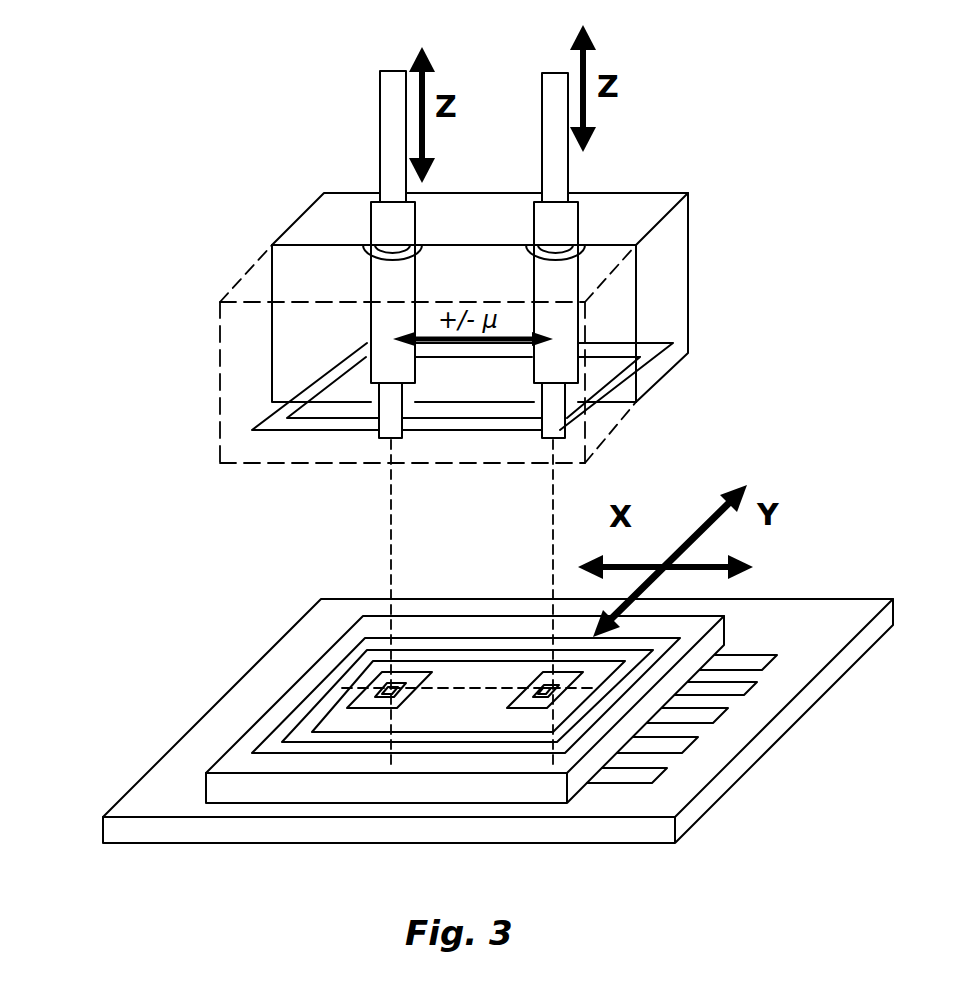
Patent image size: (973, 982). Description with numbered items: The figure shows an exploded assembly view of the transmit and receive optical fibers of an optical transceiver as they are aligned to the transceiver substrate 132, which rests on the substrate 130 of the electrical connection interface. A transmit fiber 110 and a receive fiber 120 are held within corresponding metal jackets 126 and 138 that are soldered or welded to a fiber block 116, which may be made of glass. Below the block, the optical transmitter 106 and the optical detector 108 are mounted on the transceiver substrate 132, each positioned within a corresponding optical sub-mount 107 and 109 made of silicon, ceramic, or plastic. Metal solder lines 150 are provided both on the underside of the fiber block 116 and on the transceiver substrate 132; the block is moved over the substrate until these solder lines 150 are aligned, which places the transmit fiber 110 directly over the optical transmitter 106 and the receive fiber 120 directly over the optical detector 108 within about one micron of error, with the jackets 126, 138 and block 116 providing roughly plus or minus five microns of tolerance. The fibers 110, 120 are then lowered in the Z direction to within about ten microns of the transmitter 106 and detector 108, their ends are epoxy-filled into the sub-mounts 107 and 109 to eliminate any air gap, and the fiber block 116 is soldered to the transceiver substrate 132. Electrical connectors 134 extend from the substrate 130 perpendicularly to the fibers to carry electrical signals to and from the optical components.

The optical transmitter 106 is at (540, 687).
The optical sub-mount 107 is at (522, 702).
The optical detector 108 is at (387, 685).
The optical sub-mount 109 is at (348, 707).
The transmit fiber 110 is at (565, 175).
The fiber block 116 is at (690, 292).
The receive fiber 120 is at (381, 120).
The metal jacket 126 is at (560, 222).
The substrate 130 is at (593, 835).
The transceiver substrate 132 is at (235, 762).
The electrical connectors 134 is at (738, 690).
The metal jacket 138 is at (383, 222).
The metal solder lines 150 is at (300, 425).